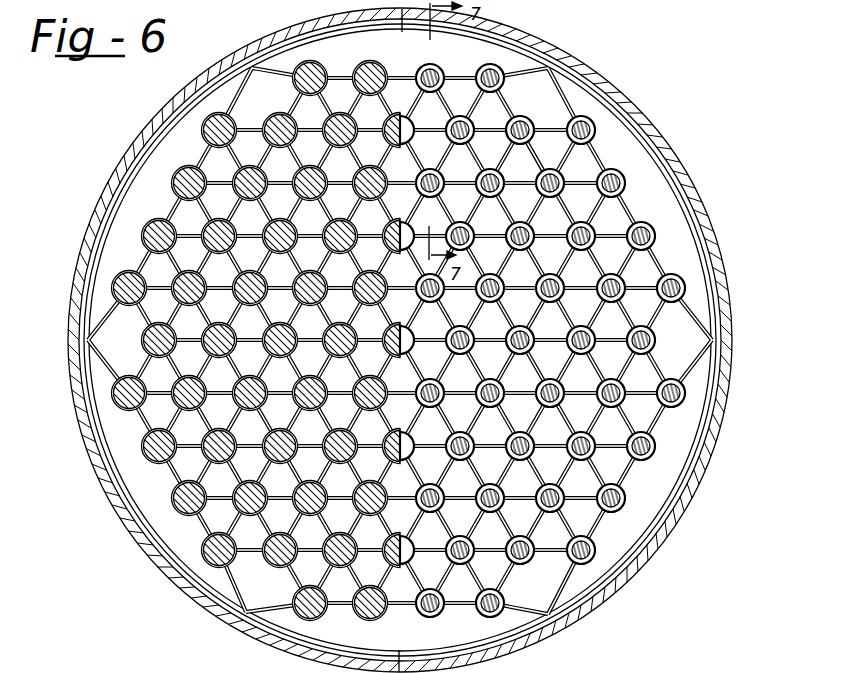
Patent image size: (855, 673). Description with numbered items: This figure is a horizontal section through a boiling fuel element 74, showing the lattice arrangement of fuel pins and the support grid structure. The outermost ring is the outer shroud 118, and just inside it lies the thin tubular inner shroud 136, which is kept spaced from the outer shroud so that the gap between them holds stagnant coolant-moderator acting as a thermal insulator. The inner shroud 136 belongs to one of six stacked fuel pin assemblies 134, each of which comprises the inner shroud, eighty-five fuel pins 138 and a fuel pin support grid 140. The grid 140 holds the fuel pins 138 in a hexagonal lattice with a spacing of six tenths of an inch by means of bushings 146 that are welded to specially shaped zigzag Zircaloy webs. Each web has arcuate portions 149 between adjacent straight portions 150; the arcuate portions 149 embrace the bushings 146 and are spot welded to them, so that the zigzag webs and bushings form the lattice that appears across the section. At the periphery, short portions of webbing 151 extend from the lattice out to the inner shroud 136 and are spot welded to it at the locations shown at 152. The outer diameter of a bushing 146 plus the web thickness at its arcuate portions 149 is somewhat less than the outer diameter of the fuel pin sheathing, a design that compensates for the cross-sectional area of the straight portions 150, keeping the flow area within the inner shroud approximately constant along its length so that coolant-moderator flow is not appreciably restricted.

The boiling fuel element 74 is at (672, 60).
The outer shroud 118 is at (140, 144).
The inner shroud 136 is at (133, 174).
The fuel pin assembly 134 is at (608, 129).
The bushing 146 is at (410, 79).
The arcuate portion 149 is at (543, 170).
The straight portion 150 is at (550, 228).
The fuel pin 138 is at (323, 273).
The fuel pin support grid 140 is at (166, 470).
The spot weld 152 is at (86, 340).
The short portion of webbing 151 is at (712, 337).